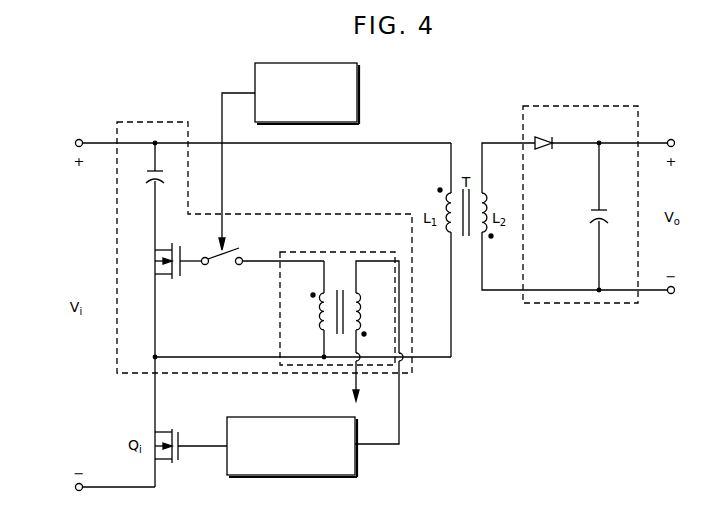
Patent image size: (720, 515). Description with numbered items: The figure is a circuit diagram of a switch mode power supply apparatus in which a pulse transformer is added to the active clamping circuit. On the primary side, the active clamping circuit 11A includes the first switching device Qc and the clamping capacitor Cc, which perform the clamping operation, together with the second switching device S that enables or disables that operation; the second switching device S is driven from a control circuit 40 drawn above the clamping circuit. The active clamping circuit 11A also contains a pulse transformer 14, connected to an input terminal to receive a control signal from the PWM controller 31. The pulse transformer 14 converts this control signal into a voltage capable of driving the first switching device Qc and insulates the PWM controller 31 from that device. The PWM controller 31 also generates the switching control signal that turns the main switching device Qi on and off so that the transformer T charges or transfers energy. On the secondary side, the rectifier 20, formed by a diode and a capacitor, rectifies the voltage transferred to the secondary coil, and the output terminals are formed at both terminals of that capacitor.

The active clamping circuit 11A is at (142, 122).
The control circuit 40 is at (328, 63).
The pulse transformer 14 is at (336, 252).
The rectifier 20 is at (585, 106).
The PWM controller 31 is at (300, 417).